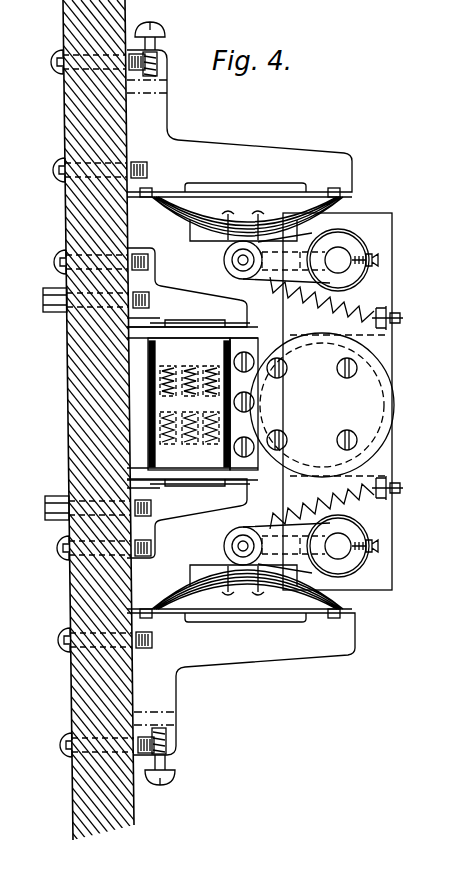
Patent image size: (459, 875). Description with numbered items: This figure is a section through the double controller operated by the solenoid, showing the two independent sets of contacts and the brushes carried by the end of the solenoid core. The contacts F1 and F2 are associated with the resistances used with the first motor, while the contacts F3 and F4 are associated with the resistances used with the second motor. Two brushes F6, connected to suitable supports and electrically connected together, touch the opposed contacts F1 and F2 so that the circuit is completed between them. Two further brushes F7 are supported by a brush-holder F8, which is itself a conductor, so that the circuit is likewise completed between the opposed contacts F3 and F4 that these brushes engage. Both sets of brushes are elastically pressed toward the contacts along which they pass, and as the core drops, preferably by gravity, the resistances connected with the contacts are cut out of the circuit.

The contact F1 is at (283, 155).
The contact F2 is at (333, 645).
The contact F3 is at (187, 302).
The contact F4 is at (192, 508).
The brush F6 is at (318, 205).
The brush F7 is at (160, 476).
The brush-holder F8 is at (172, 355).